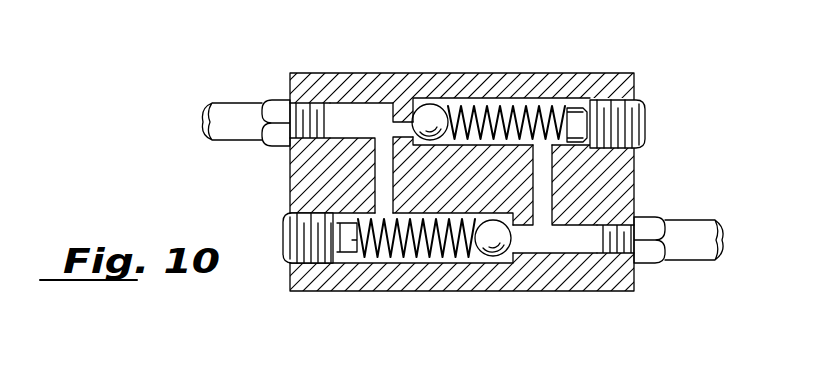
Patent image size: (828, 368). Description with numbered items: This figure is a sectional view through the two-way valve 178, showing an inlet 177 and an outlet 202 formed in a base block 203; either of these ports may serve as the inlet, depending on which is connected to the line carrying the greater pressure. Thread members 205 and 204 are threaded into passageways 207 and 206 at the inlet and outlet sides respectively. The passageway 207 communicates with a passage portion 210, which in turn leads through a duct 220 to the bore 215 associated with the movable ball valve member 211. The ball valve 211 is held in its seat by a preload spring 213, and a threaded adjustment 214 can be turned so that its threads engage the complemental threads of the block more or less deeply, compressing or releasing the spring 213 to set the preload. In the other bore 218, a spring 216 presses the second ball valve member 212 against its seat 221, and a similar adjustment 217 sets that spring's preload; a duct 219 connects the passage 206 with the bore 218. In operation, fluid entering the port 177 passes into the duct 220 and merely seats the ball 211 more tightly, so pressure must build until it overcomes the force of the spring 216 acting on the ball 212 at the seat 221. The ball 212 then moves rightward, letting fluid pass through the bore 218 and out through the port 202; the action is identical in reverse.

The two-way valve 178 is at (411, 66).
The inlet 177 is at (235, 110).
The outlet 202 is at (690, 232).
The base block 203 is at (622, 84).
The thread member 204 is at (652, 252).
The thread member 205 is at (275, 110).
The passageway 206 is at (588, 234).
The passageway 207 is at (313, 108).
The passage portion 210 is at (432, 80).
The ball valve member 211 is at (503, 243).
The ball valve member 212 is at (497, 100).
The preload spring 213 is at (434, 250).
The threaded adjustment 214 is at (300, 236).
The bore 215 is at (382, 264).
The spring 216 is at (601, 98).
The adjustment 217 is at (647, 113).
The bore 218 is at (573, 106).
The duct 219 is at (545, 183).
The duct 220 is at (383, 177).
The valve seat 221 is at (441, 104).